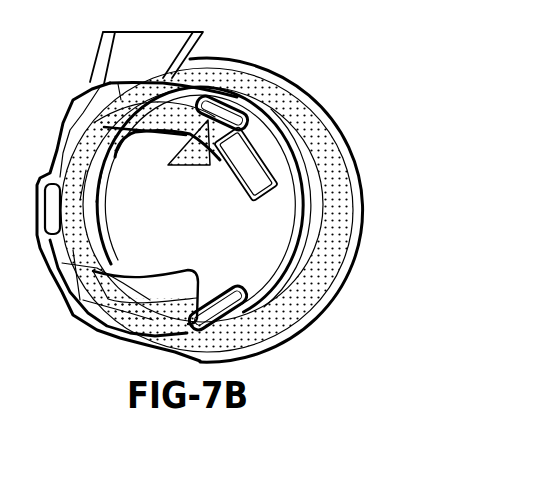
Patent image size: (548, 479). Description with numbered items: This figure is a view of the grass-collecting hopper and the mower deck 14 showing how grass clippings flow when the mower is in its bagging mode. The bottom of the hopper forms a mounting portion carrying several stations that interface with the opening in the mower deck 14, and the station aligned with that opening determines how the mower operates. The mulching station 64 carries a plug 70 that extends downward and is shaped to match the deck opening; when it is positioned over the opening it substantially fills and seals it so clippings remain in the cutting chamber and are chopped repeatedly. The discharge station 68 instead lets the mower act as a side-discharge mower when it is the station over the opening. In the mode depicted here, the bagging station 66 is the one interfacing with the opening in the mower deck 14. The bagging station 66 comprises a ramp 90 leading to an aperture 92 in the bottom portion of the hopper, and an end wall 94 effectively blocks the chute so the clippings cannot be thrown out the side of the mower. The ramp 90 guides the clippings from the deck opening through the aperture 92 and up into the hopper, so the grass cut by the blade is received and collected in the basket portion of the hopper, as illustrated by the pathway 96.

The mower deck 14 is at (317, 313).
The mulching station 64 is at (228, 180).
The bagging station 66 is at (67, 127).
The discharge station 68 is at (153, 275).
The plug 70 is at (265, 129).
The ramp 90 is at (95, 183).
The aperture 92 is at (115, 157).
The end wall 94 is at (100, 87).
The pathway 96 is at (188, 166).